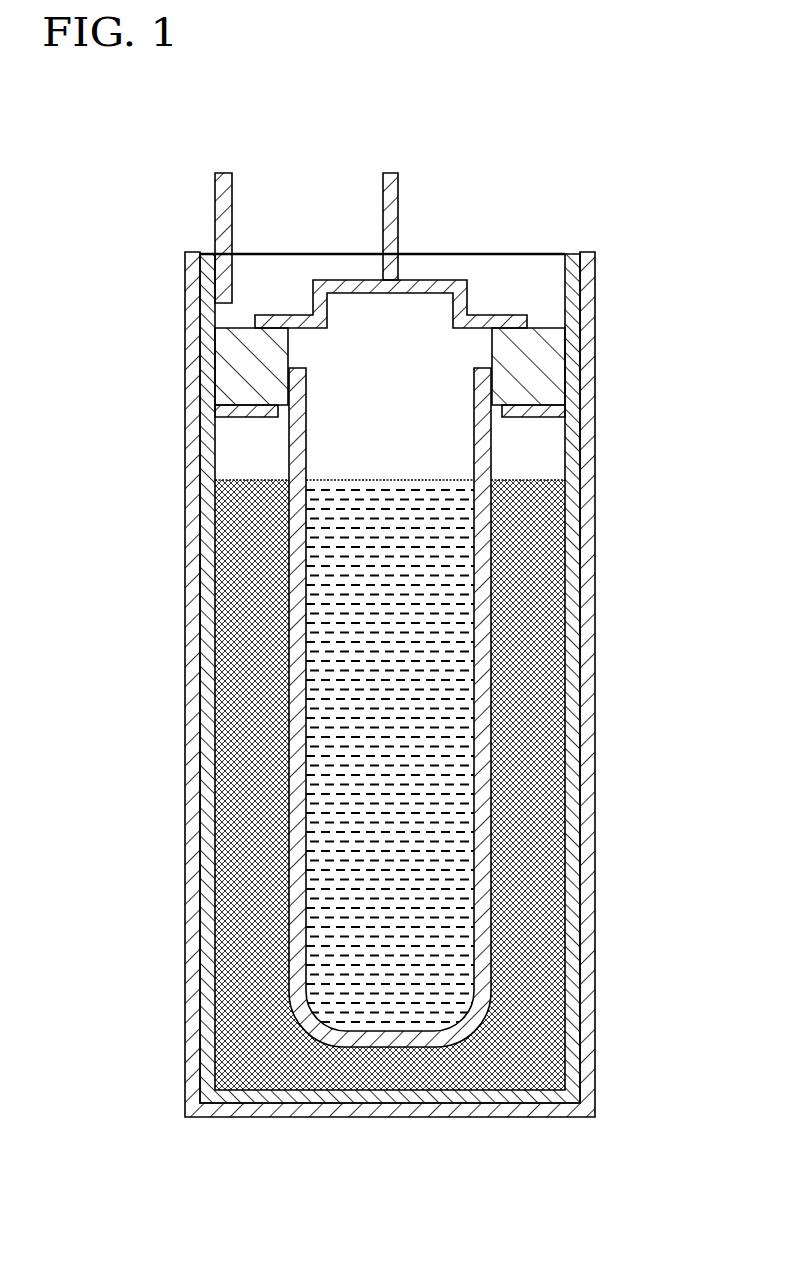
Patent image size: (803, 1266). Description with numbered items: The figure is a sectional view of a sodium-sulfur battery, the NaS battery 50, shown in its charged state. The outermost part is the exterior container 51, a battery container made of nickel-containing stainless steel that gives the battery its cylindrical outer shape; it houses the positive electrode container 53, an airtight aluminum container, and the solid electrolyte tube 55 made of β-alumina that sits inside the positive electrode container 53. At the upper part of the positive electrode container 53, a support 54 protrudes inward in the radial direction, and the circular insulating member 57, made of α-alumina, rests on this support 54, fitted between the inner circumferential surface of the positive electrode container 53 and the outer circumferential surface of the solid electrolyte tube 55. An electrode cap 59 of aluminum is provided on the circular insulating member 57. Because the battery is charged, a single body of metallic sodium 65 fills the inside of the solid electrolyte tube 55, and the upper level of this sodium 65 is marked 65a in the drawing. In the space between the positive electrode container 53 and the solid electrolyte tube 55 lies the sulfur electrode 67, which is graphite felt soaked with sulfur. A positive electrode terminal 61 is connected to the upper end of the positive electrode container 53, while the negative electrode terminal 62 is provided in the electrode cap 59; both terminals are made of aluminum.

The NaS battery 50 is at (643, 149).
The exterior container 51 is at (595, 868).
The positive electrode container 53 is at (207, 696).
The support 54 is at (252, 418).
The solid electrolyte tube 55 is at (478, 710).
The circular insulating member 57 is at (225, 357).
The electrode cap 59 is at (447, 278).
The positive electrode terminal 61 is at (234, 183).
The negative electrode terminal 62 is at (400, 185).
The sodium 65 is at (462, 571).
The electrolyte surface 65a is at (428, 481).
The sulfur electrode 67 is at (548, 1012).